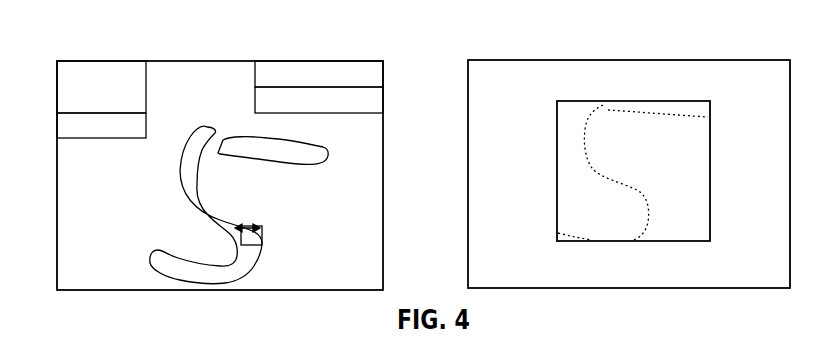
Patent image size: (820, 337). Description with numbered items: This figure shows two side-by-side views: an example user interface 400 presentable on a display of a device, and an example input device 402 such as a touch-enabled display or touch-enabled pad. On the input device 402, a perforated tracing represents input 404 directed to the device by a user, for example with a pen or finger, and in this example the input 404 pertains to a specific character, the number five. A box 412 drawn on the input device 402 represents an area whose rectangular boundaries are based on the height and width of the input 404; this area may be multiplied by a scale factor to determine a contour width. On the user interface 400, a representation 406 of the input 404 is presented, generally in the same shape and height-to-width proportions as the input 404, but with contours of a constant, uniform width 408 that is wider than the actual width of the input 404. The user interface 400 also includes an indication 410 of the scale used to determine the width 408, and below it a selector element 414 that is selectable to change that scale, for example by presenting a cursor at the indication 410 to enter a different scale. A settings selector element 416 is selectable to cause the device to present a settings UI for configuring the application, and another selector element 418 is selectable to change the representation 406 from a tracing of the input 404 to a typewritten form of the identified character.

The user interface 400 is at (57, 170).
The input device 402 is at (687, 59).
The input 404 is at (617, 178).
The representation 406 is at (247, 220).
The width 408 is at (262, 242).
The indication 410 is at (115, 60).
The box 412 is at (678, 100).
The selector element 414 is at (123, 139).
The settings selector element 416 is at (363, 61).
The selector element 418 is at (335, 113).